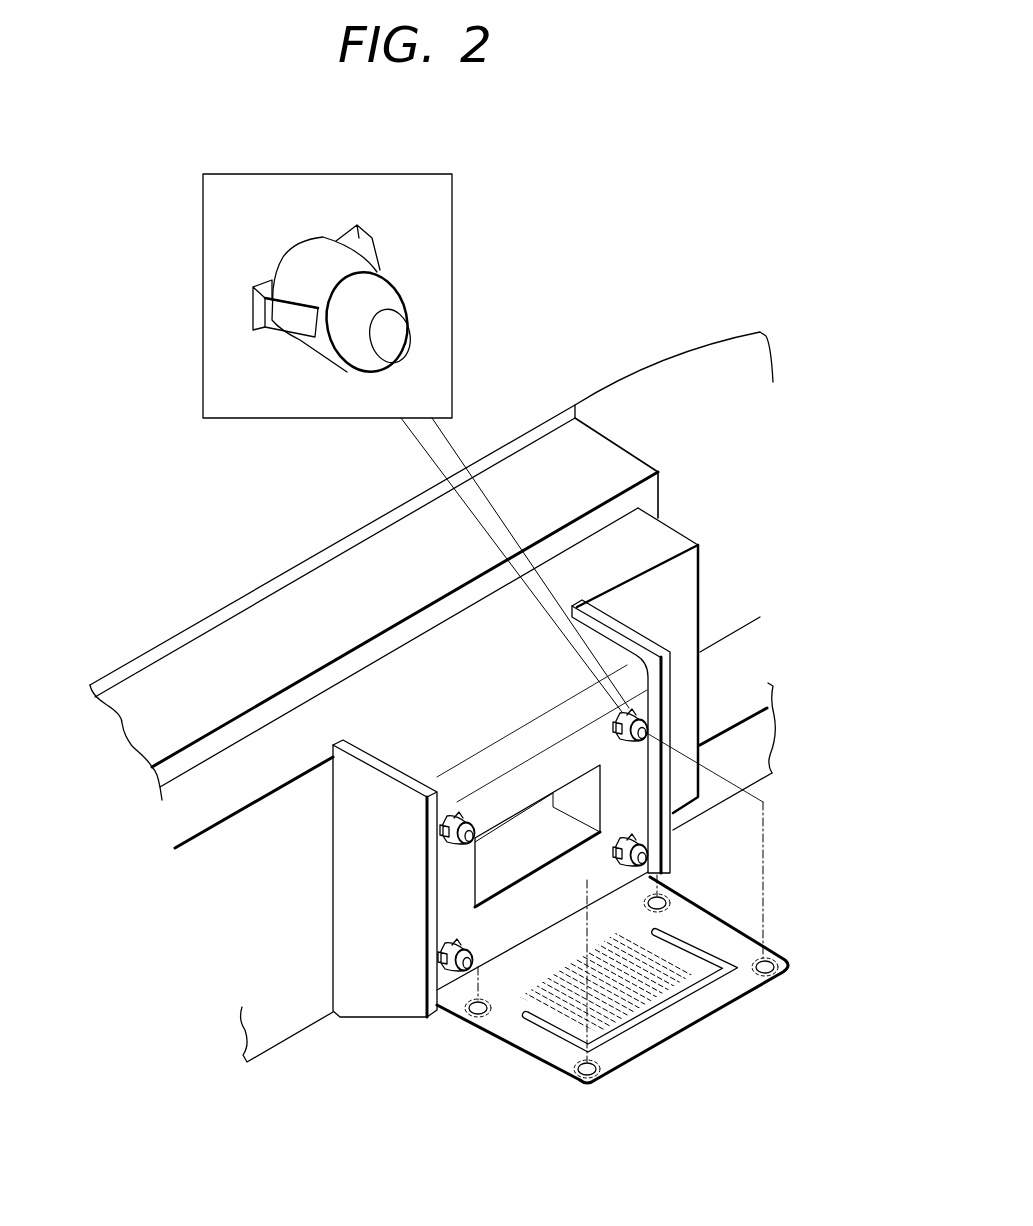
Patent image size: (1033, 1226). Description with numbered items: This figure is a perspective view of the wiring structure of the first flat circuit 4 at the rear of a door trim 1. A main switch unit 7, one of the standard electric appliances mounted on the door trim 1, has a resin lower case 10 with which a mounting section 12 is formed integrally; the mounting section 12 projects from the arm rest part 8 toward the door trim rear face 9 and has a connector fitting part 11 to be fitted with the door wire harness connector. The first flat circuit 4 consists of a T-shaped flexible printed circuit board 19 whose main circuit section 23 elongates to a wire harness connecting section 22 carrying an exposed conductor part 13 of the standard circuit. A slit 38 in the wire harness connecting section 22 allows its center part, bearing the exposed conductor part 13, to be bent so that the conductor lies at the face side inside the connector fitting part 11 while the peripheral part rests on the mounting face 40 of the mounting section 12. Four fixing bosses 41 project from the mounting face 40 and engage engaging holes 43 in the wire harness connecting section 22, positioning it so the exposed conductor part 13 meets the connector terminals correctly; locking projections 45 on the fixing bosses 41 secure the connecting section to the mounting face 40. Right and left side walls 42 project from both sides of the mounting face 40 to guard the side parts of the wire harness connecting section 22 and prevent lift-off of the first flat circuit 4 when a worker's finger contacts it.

The door trim 1 is at (232, 547).
The first flat circuit 4 is at (530, 880).
The main switch unit 7 is at (638, 418).
The arm rest part 8 is at (720, 383).
The door trim rear face 9 is at (175, 598).
The resin lower case 10 is at (670, 533).
The connector fitting part 11 is at (480, 880).
The mounting section 12 is at (351, 1040).
The exposed conductor part 13 is at (540, 1023).
The flexible printed circuit board 19 is at (688, 918).
The wire harness connecting section 22 is at (678, 1023).
The main circuit section 23 is at (458, 1036).
The slit 38 is at (703, 980).
The mounting face 40 is at (547, 765).
The fixing boss 41 is at (455, 815).
The side wall 42 is at (367, 830).
The engaging hole 43 is at (600, 1082).
The locking projection 45 is at (268, 320).